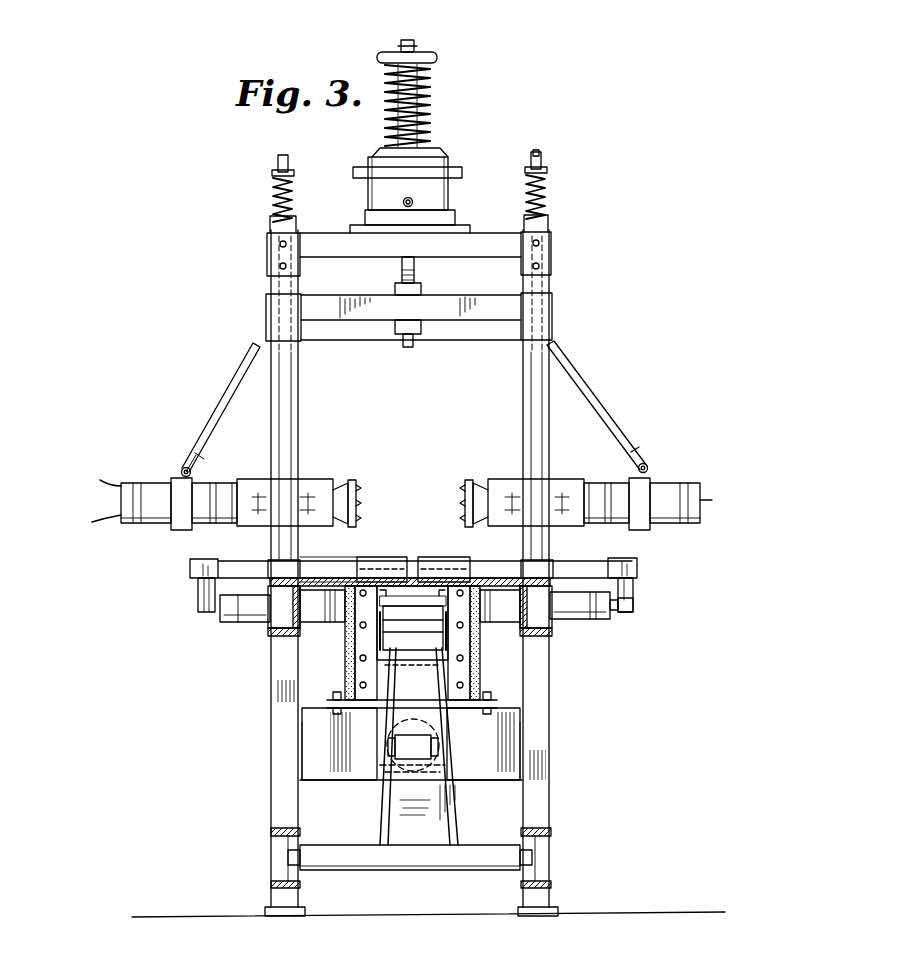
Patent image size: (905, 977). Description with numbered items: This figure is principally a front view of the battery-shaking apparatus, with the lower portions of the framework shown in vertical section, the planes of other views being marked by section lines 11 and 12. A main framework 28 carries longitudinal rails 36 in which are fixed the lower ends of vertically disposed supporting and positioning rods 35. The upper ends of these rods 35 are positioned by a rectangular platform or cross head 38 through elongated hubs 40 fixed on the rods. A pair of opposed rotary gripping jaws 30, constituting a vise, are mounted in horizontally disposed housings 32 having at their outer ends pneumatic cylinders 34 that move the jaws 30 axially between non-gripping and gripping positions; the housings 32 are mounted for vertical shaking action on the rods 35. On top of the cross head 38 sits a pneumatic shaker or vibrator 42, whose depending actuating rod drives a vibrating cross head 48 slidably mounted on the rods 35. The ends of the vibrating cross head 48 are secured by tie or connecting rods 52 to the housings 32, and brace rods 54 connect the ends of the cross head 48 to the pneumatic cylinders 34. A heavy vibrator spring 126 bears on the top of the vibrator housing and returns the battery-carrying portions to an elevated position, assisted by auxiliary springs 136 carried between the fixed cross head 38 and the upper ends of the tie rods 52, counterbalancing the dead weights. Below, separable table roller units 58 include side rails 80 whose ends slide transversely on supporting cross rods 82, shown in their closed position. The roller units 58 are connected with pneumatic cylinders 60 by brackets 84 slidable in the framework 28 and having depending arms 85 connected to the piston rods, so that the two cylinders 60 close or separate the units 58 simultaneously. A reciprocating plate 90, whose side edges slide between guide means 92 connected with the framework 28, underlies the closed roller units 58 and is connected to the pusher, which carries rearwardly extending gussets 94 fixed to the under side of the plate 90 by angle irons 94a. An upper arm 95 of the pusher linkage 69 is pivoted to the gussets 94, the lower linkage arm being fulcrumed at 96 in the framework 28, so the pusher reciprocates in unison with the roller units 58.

The section line 11— 11 is at (407, 14).
The section line 12— 12 is at (447, 483).
The main framework 28 is at (270, 690).
The rotary gripping jaws 30 is at (345, 490).
The housings 32 is at (260, 481).
The pneumatic cylinders 34 is at (155, 483).
The supporting and positioning rods 35 is at (549, 430).
The longitudinal rails 36 is at (547, 648).
The rectangular platform or cross head 38 is at (468, 255).
The elongated hubs 40 is at (552, 252).
The pneumatic shaker or vibrator 42 is at (439, 136).
The vibrating cross head 48 is at (348, 296).
The tie or connecting rods 52 is at (537, 152).
The brace rods 54 is at (220, 403).
The separable table roller units 58 is at (396, 557).
The pneumatic cylinders 60 is at (245, 622).
The linkage 69 is at (420, 800).
The side rails 80 is at (350, 560).
The supporting cross rods 82 is at (505, 562).
The brackets 84 is at (605, 575).
The depending arms 85 is at (633, 594).
The reciprocating plate 90 is at (424, 586).
The guide means 92 is at (518, 600).
The gussets 94 is at (378, 634).
The angle irons 94a is at (413, 607).
The upper arm 95 is at (413, 628).
The fulcrum 96 is at (486, 848).
The vibrator spring 126 is at (455, 125).
The auxiliary springs 136 is at (266, 188).